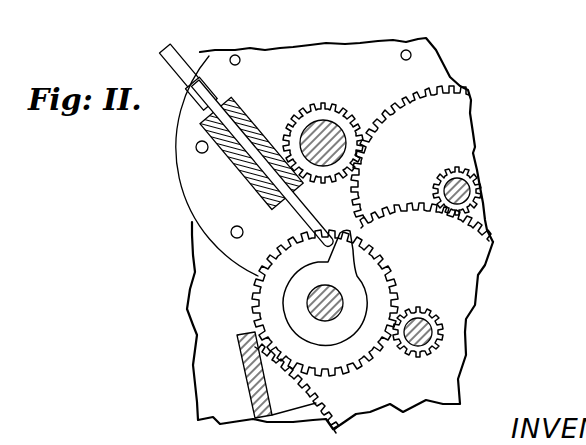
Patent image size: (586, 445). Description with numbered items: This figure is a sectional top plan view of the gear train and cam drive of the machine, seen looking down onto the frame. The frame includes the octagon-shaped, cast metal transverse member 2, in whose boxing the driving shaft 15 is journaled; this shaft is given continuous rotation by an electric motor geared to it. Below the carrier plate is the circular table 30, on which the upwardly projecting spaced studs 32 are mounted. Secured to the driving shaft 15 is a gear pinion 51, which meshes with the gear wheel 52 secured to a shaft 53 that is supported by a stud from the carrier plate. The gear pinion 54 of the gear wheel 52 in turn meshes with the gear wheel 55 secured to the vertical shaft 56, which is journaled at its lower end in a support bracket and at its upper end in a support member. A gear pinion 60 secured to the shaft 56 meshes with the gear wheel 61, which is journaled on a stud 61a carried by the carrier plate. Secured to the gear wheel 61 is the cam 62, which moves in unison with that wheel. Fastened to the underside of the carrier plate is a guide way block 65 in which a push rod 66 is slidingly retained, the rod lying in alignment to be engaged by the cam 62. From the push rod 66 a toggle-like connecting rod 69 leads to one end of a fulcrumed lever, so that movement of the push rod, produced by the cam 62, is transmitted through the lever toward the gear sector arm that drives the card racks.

The transverse member 2 is at (200, 338).
The driving shaft 15 is at (322, 128).
The circular table 30 is at (432, 61).
The studs 32 is at (196, 149).
The gear pinion 51 is at (295, 118).
The gear wheel 52 is at (463, 107).
The shaft 53 is at (448, 170).
The gear pinion 54 is at (481, 173).
The gear wheel 55 is at (475, 277).
The vertical shaft 56 is at (425, 323).
The gear pinion 60 is at (440, 347).
The gear wheel 61 is at (376, 265).
The stud 61a is at (307, 300).
The cam 62 is at (328, 258).
The guide way block 65 is at (240, 168).
The push rod 66 is at (303, 213).
The connecting rod 69 is at (177, 74).